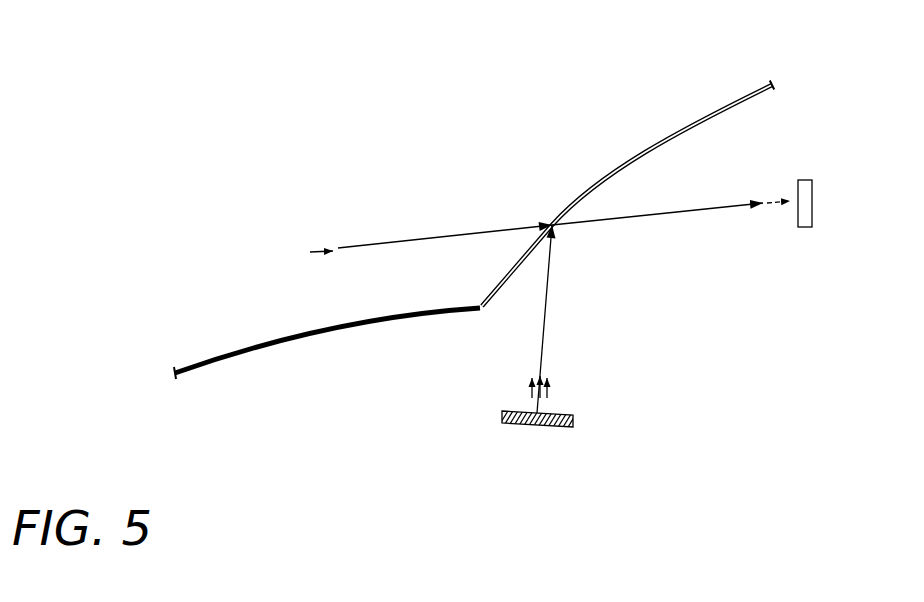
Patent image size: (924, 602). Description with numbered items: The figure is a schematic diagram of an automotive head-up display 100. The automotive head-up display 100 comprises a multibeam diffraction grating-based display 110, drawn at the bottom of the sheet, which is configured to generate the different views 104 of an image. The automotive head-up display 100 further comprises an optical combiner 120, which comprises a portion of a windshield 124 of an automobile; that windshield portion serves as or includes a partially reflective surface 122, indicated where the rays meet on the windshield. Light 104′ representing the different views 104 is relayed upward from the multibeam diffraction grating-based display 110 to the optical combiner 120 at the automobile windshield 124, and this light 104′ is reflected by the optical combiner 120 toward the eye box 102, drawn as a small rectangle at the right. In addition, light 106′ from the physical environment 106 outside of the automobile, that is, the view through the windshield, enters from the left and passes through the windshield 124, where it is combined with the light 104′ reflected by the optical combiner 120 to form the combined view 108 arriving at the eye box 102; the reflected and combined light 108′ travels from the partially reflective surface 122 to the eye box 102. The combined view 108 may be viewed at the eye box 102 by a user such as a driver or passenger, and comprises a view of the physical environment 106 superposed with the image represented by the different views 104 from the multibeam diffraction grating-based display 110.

The automotive head-up display 100 is at (210, 58).
The eye box 102 is at (806, 182).
The different views 104 is at (517, 391).
The light 104′ is at (530, 332).
The physical environment 106 is at (323, 237).
The light 106′ is at (465, 227).
The combined view 108 is at (777, 190).
The reflected light ray 108′ is at (677, 229).
The multibeam diffraction grating-based display 110 is at (565, 413).
The optical combiner 120 is at (474, 226).
The partially reflective surface 122 is at (567, 240).
The windshield 124 is at (620, 167).